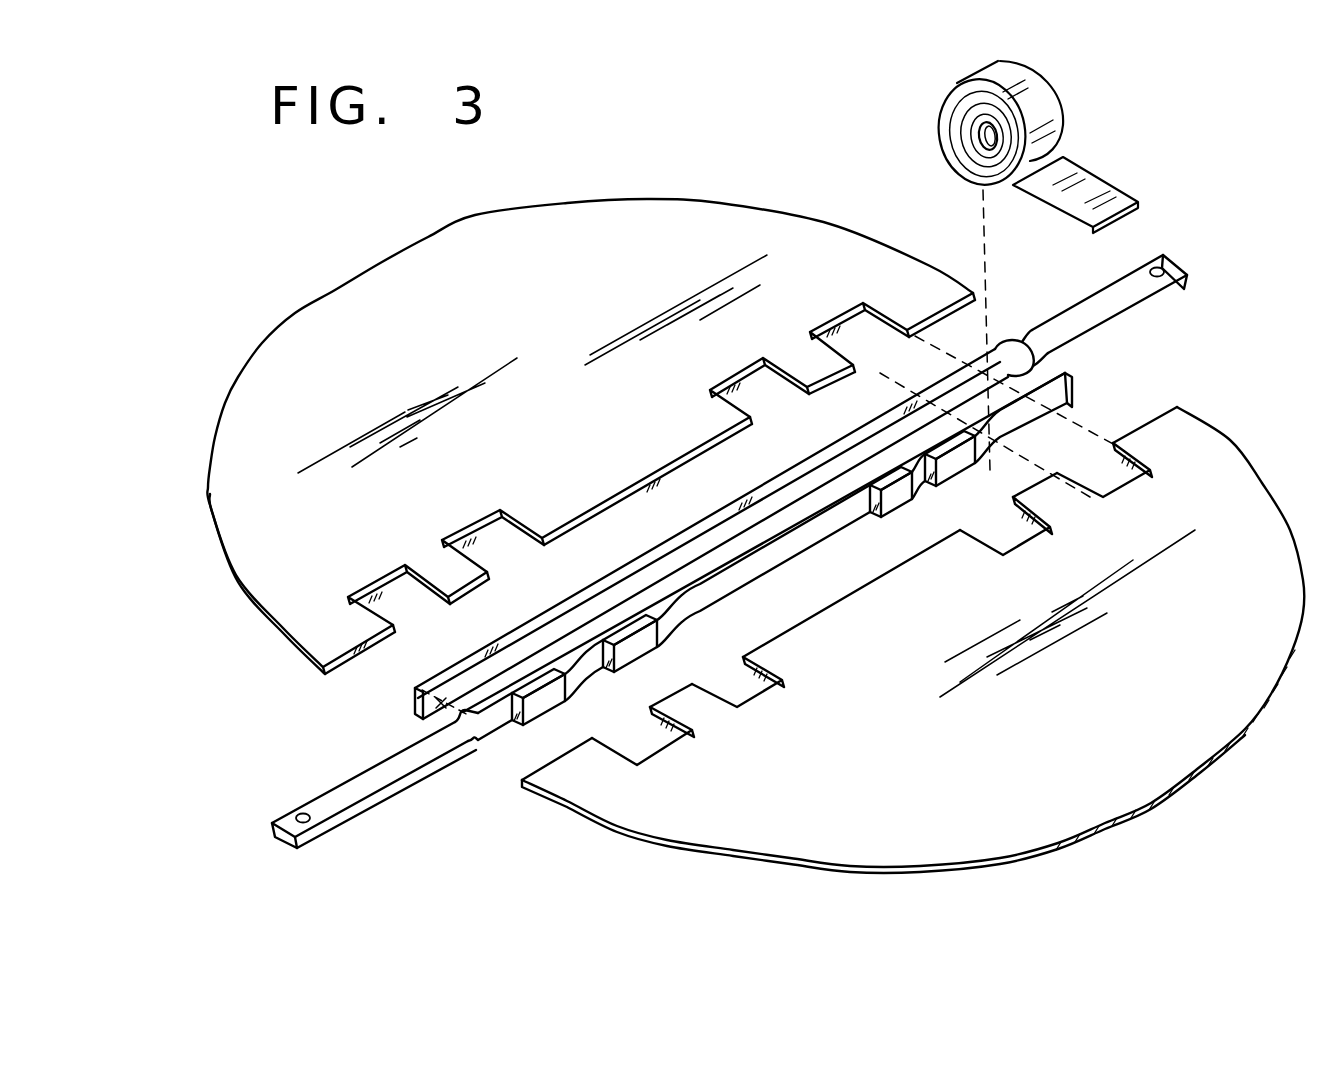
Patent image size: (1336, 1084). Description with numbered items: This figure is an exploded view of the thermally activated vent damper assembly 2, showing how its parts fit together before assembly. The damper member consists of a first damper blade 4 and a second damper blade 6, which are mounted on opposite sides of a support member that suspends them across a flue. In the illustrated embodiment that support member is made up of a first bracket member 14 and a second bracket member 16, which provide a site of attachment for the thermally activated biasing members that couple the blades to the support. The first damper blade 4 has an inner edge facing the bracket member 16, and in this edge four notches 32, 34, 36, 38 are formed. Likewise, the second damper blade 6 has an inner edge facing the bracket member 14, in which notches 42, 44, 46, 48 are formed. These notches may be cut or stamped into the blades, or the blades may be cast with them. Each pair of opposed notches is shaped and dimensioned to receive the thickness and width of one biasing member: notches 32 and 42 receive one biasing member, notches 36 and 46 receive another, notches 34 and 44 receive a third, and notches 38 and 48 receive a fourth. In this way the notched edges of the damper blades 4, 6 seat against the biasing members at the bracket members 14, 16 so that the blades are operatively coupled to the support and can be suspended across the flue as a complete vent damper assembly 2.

The thermally activated vent damper assembly 2 is at (1211, 318).
The first damper blade 4 is at (913, 675).
The second damper blade 6 is at (559, 436).
The first bracket member 14 is at (792, 483).
The second bracket member 16 is at (713, 600).
The notch 32 is at (663, 740).
The notch 34 is at (752, 688).
The notch 36 is at (1022, 533).
The notch 38 is at (1123, 477).
The notch 42 is at (395, 588).
The notch 44 is at (483, 535).
The notch 46 is at (747, 390).
The notch 48 is at (850, 333).